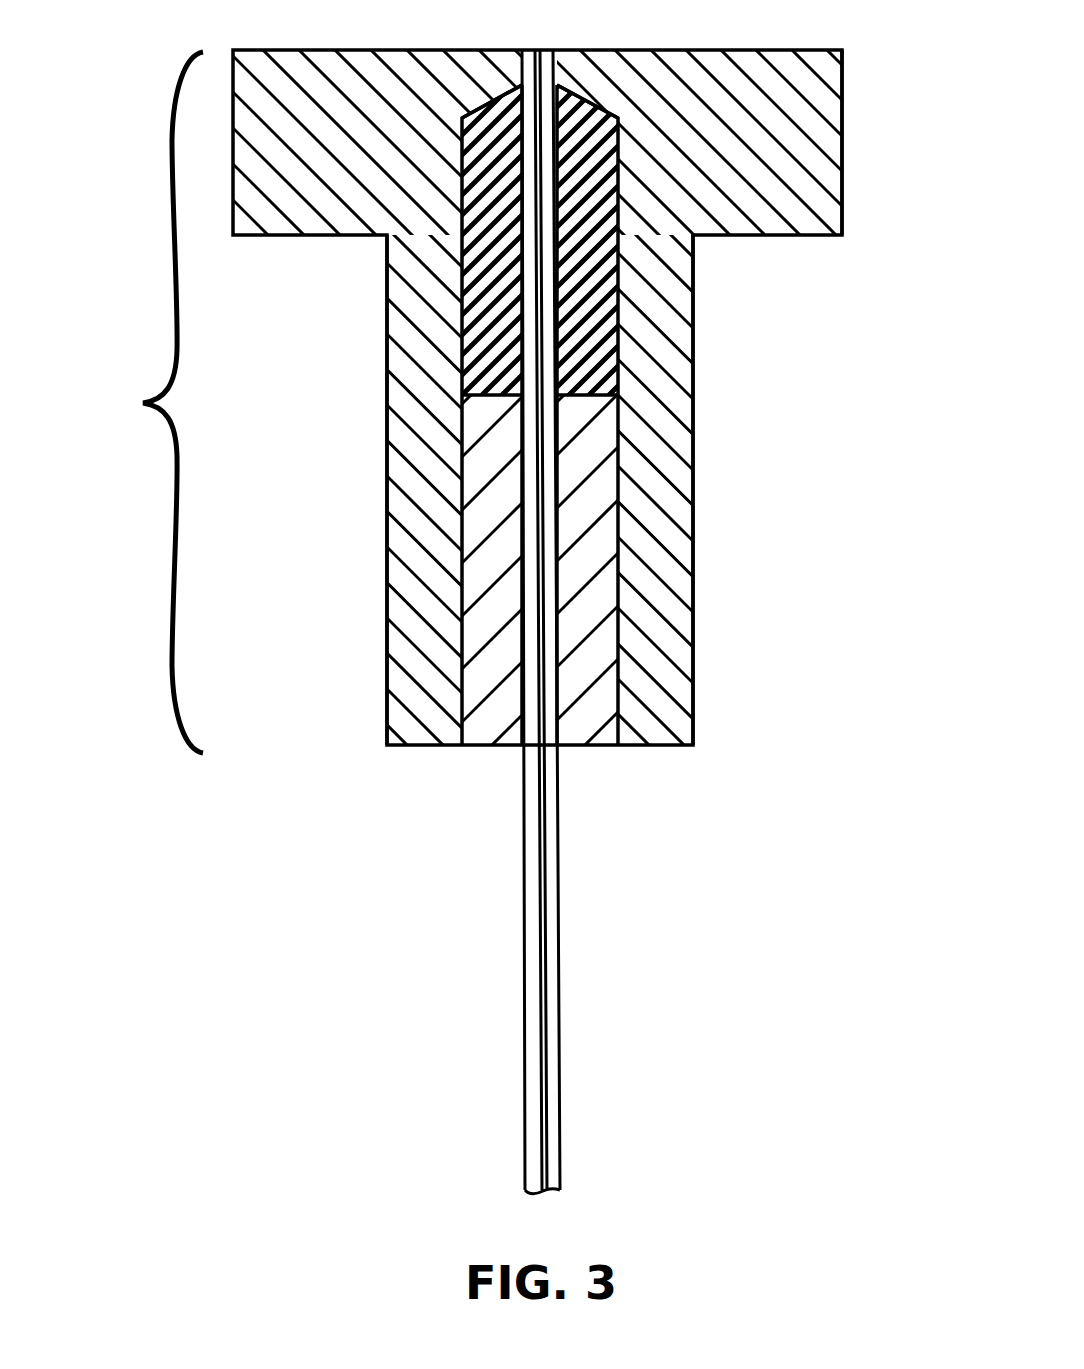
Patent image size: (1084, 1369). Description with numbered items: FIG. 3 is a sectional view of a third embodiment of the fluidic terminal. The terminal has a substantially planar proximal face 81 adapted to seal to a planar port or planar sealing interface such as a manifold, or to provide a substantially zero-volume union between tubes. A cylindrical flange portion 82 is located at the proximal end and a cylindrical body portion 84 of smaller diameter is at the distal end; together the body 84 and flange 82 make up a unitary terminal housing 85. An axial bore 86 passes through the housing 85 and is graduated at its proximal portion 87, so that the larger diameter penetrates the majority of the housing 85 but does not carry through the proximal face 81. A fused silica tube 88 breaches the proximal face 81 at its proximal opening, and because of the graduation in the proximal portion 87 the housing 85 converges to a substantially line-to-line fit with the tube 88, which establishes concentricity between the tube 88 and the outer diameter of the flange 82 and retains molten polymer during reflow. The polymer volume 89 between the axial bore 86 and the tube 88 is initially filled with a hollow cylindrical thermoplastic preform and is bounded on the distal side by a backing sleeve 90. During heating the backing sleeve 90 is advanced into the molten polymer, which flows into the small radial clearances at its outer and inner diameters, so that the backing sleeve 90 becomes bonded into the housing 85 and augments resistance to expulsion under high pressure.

The proximal face 81 is at (733, 50).
The cylindrical flange portion 82 is at (845, 115).
The cylindrical body portion 84 is at (694, 442).
The terminal housing 85 is at (151, 402).
The axial bore 86 is at (618, 291).
The proximal portion of the bore 87 is at (487, 105).
The fused silica tube 88 is at (524, 999).
The polymer volume 89 is at (473, 291).
The backing sleeve 90 is at (604, 647).